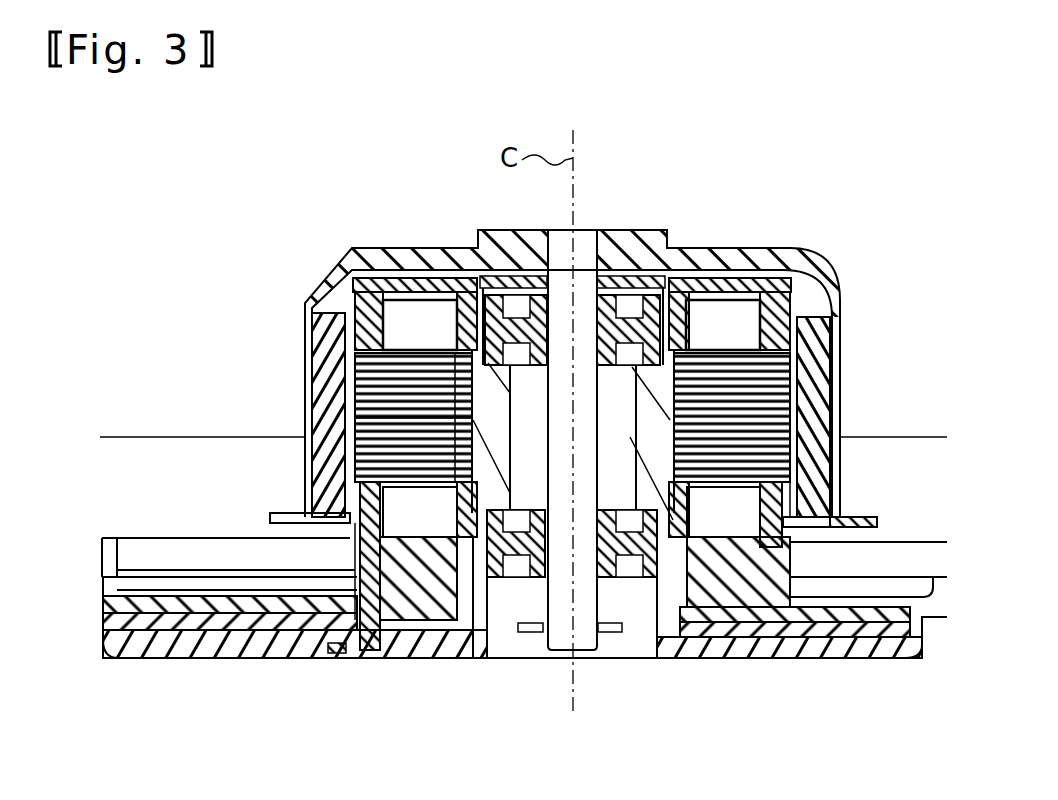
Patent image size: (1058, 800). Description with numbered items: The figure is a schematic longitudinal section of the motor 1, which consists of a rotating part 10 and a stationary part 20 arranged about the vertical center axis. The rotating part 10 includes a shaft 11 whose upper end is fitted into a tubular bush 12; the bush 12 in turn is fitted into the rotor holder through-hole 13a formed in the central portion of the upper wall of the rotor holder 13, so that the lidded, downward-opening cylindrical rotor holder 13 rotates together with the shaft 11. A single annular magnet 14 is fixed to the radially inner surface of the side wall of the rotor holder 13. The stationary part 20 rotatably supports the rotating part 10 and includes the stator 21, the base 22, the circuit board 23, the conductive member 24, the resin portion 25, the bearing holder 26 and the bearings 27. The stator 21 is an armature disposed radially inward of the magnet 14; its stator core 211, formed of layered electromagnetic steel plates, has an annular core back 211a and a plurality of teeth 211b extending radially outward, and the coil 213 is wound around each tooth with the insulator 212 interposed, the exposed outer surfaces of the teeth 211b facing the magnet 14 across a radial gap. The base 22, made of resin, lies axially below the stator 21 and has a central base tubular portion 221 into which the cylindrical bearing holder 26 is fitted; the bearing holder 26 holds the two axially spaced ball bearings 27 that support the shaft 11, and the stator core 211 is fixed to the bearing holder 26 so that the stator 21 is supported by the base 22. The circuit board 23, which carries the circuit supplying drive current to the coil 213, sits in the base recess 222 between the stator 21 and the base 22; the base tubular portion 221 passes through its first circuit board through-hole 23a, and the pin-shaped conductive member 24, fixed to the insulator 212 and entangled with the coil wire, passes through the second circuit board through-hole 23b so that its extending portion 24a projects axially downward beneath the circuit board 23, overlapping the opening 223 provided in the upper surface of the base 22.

The motor 1 is at (808, 185).
The rotating part 10 is at (312, 259).
The shaft 11 is at (585, 240).
The bush 12 is at (640, 240).
The rotor holder 13 is at (785, 255).
The rotor holder through-hole 13a is at (518, 280).
The magnet 14 is at (813, 338).
The stationary part 20 is at (834, 684).
The stator 21 is at (787, 307).
The stator core 211 is at (200, 352).
The core back 211a is at (400, 383).
The teeth 211b is at (377, 410).
The insulator 212 is at (370, 337).
The coil 213 is at (402, 322).
The base 22 is at (167, 647).
The circuit board 23 is at (272, 632).
The first circuit board through-hole 23a is at (456, 622).
The second circuit board through-hole 23b is at (352, 594).
The conductive member 24 is at (355, 570).
The extending portion 24a is at (340, 657).
The resin portion 25 is at (838, 517).
The bearing holder 26 is at (650, 432).
The bearing 27 is at (492, 300).
The base tubular portion 221 is at (690, 625).
The base recess 222 is at (888, 595).
The opening 223 is at (363, 650).